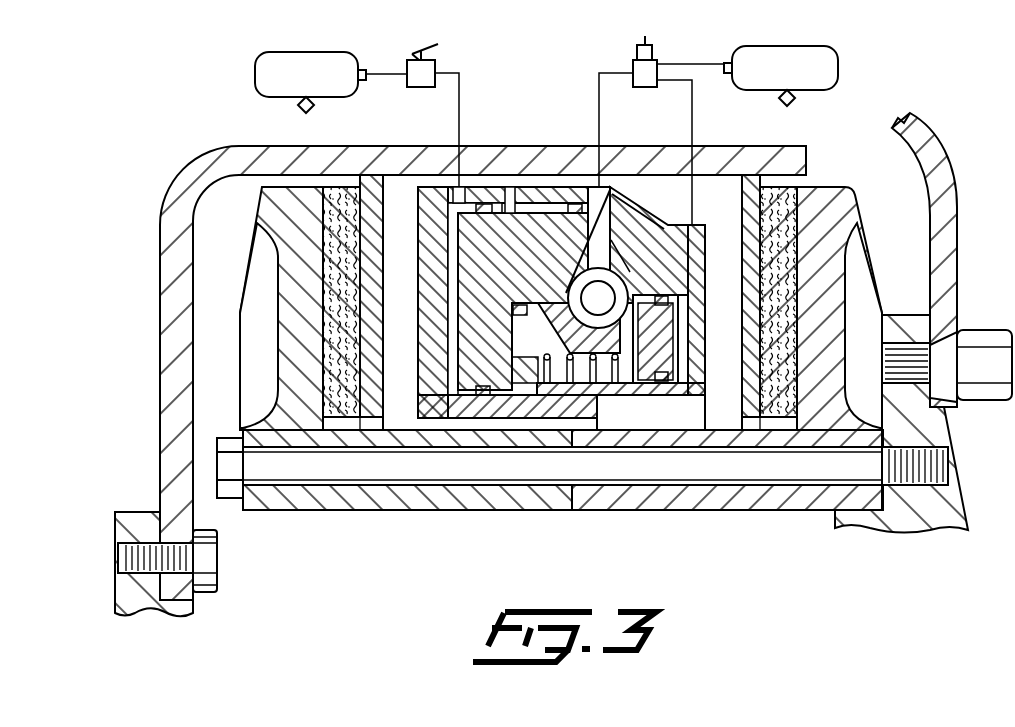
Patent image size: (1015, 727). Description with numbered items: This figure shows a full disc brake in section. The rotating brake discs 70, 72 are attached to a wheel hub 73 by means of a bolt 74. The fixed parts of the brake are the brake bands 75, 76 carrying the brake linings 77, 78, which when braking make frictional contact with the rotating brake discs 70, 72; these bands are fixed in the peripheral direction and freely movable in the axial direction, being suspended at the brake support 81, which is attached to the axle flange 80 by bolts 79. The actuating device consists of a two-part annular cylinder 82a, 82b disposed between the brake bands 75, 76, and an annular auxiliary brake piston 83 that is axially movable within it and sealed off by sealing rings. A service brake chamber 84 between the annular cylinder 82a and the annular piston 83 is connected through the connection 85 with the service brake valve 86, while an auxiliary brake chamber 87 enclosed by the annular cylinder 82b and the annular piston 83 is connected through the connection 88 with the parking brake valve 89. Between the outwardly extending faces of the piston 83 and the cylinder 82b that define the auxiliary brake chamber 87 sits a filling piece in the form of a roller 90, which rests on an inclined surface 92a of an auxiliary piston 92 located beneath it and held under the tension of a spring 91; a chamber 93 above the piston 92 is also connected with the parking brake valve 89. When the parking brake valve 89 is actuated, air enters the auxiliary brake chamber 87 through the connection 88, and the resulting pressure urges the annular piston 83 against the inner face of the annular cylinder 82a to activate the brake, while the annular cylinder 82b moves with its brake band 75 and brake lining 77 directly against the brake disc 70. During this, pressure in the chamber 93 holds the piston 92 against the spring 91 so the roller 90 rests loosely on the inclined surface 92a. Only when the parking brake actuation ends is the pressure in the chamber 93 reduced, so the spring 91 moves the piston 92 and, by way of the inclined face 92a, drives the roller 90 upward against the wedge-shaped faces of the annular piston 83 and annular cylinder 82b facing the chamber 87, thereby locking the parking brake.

The brake disc 70 is at (836, 218).
The brake disc 72 is at (280, 208).
The wheel hub 73 is at (938, 505).
The bolt 74 is at (920, 462).
The brake band 75 is at (752, 190).
The brake band 76 is at (372, 187).
The brake lining 77 is at (780, 200).
The brake lining 78 is at (342, 187).
The bolts 79 is at (204, 580).
The axle flange 80 is at (126, 597).
The brake support 81 is at (172, 424).
The annular cylinder part 82a is at (488, 206).
The annular cylinder part 82b is at (562, 210).
The annular auxiliary brake piston 83 is at (522, 250).
The service brake chamber 84 is at (450, 230).
The connection 85 is at (459, 188).
The service brake valve 86 is at (407, 68).
The auxiliary brake chamber 87 is at (616, 222).
The connection 88 is at (604, 225).
The parking brake valve 89 is at (633, 68).
The roller 90 is at (584, 288).
The spring 91 is at (554, 366).
The auxiliary piston 92 is at (653, 383).
The inclined surface 92a is at (570, 306).
The chamber 93 is at (676, 375).